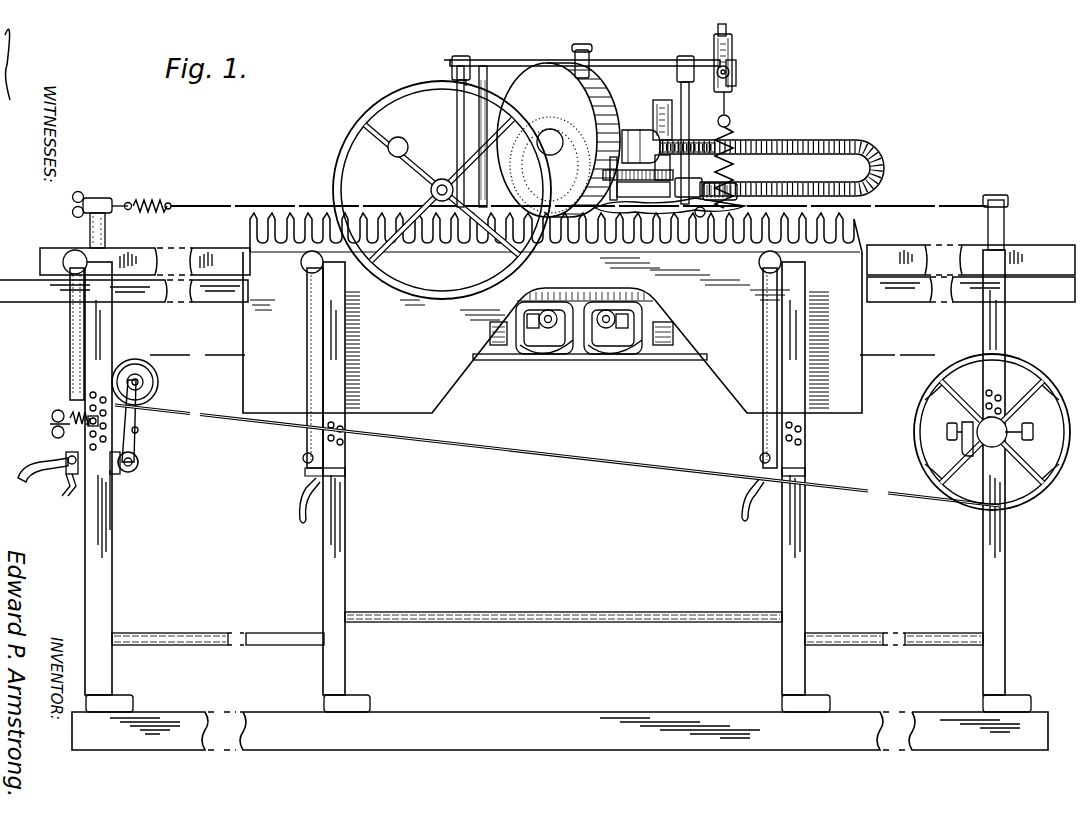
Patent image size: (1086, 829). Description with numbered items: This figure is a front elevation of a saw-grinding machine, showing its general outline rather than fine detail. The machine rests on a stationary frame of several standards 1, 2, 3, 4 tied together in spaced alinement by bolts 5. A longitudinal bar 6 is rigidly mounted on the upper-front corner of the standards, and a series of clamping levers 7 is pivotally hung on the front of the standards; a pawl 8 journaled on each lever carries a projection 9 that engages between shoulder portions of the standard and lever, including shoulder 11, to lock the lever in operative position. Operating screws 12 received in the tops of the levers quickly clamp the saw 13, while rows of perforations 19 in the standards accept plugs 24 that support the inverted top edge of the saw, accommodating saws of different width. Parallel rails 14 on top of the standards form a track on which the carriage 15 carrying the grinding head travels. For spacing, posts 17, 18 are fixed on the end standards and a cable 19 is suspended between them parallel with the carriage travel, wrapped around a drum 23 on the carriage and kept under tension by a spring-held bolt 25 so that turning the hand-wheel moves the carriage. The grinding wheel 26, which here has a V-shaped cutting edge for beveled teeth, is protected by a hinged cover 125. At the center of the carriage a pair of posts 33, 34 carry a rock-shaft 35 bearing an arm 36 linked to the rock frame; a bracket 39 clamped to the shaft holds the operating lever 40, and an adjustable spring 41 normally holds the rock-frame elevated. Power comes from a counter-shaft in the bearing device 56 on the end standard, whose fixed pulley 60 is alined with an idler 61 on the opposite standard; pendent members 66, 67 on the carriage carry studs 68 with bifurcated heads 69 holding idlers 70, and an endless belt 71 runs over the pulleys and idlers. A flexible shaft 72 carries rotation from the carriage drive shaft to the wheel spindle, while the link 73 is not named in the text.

The standard 1 is at (122, 590).
The standard 2 is at (345, 590).
The standard 3 is at (805, 573).
The standard 4 is at (1005, 583).
The bolts 5 is at (178, 625).
The longitudinal bar 6 is at (45, 258).
The clamping levers 7 is at (70, 348).
The pawl 8 is at (22, 470).
The projection 9 is at (62, 488).
The shoulder portion 11 is at (345, 478).
The operating screws 12 is at (70, 255).
The saw 13 is at (542, 313).
The parallel rails 14 is at (18, 300).
The carriage 15 is at (693, 145).
The post 17 is at (100, 195).
The post 18 is at (1001, 195).
The cable (and rows of perforations) 19 is at (190, 206).
The drum 23 is at (435, 175).
The plugs 24 is at (84, 410).
The spring-held bolt 25 is at (152, 188).
The grinding wheel 26 is at (582, 180).
The post 33 is at (686, 56).
The post 34 is at (468, 58).
The rock-shaft 35 is at (652, 50).
The arm 36 is at (589, 50).
The bracket 39 is at (735, 60).
The operating lever 40 is at (726, 28).
The adjustable spring 41 is at (733, 130).
The bearing device 56 is at (966, 438).
The fixed pulley 60 is at (908, 428).
The idler 61 is at (158, 382).
The pendent member 66 is at (495, 345).
The pendent member 67 is at (662, 345).
The studs 68 is at (545, 340).
The bifurcated heads 69 is at (620, 340).
The idlers 70 is at (560, 360).
The endless belt 71 is at (566, 455).
The flexible shaft 72 is at (790, 140).
The link 73 is at (136, 440).
The hinged cover 125 is at (558, 140).